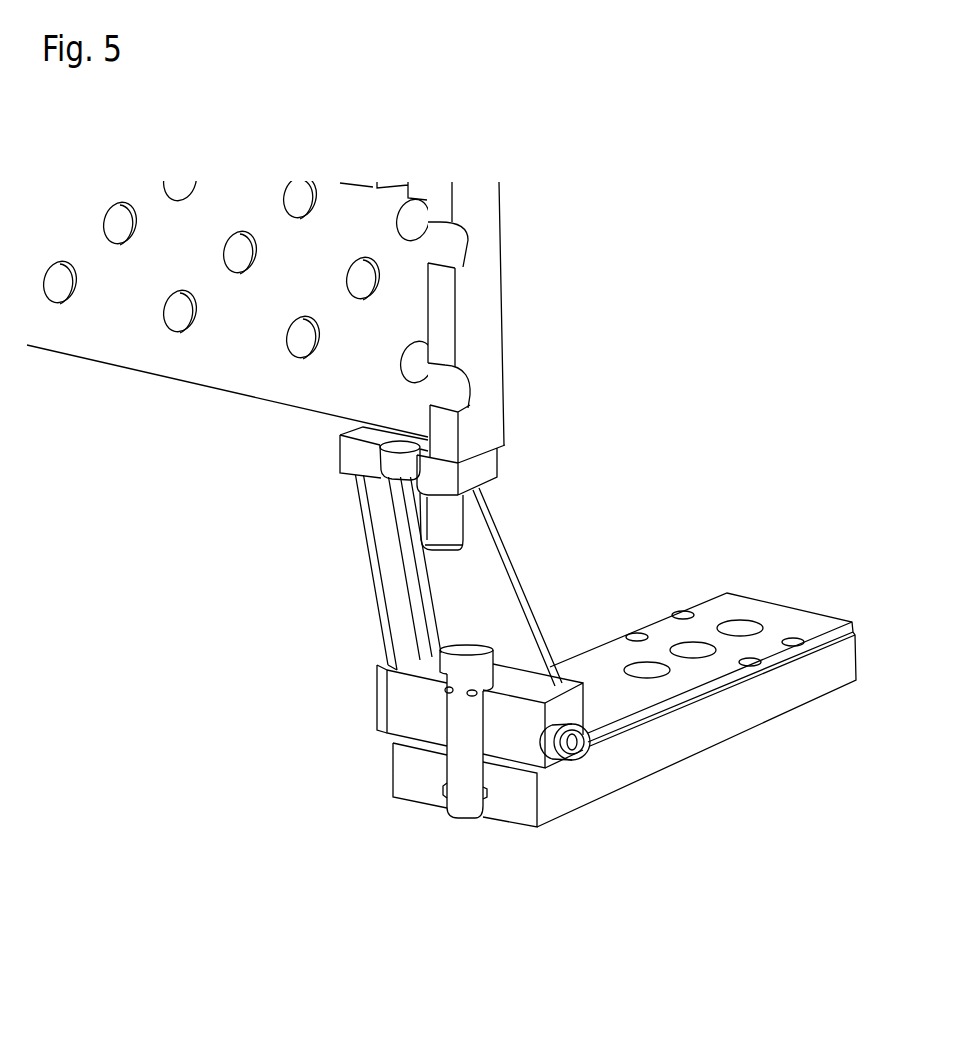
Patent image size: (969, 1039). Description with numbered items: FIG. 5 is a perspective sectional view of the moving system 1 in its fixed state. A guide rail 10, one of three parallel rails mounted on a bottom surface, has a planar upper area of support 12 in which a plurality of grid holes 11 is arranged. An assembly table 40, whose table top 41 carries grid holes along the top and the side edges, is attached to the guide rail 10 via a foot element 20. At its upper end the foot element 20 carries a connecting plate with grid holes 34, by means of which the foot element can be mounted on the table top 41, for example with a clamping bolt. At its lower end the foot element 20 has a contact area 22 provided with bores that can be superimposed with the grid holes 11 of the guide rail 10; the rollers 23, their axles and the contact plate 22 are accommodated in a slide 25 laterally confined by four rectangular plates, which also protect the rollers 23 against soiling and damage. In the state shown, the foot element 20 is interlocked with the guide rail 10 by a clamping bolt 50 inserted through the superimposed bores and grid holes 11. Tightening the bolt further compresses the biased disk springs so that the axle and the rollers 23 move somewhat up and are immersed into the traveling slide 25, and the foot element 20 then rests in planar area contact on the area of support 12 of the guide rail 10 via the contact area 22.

The assembly 1 is at (480, 1034).
The guide rail 10 is at (743, 700).
The grid holes 11 is at (653, 673).
The area of support 12 is at (727, 589).
The foot element 20 is at (382, 597).
The contact area 22 is at (417, 723).
The rollers 23 is at (573, 757).
The slide 25 is at (397, 698).
The grid holes 34 is at (397, 463).
The assembly table 40 is at (488, 264).
The table top 41 is at (187, 320).
The clamping bolt 50 is at (463, 653).